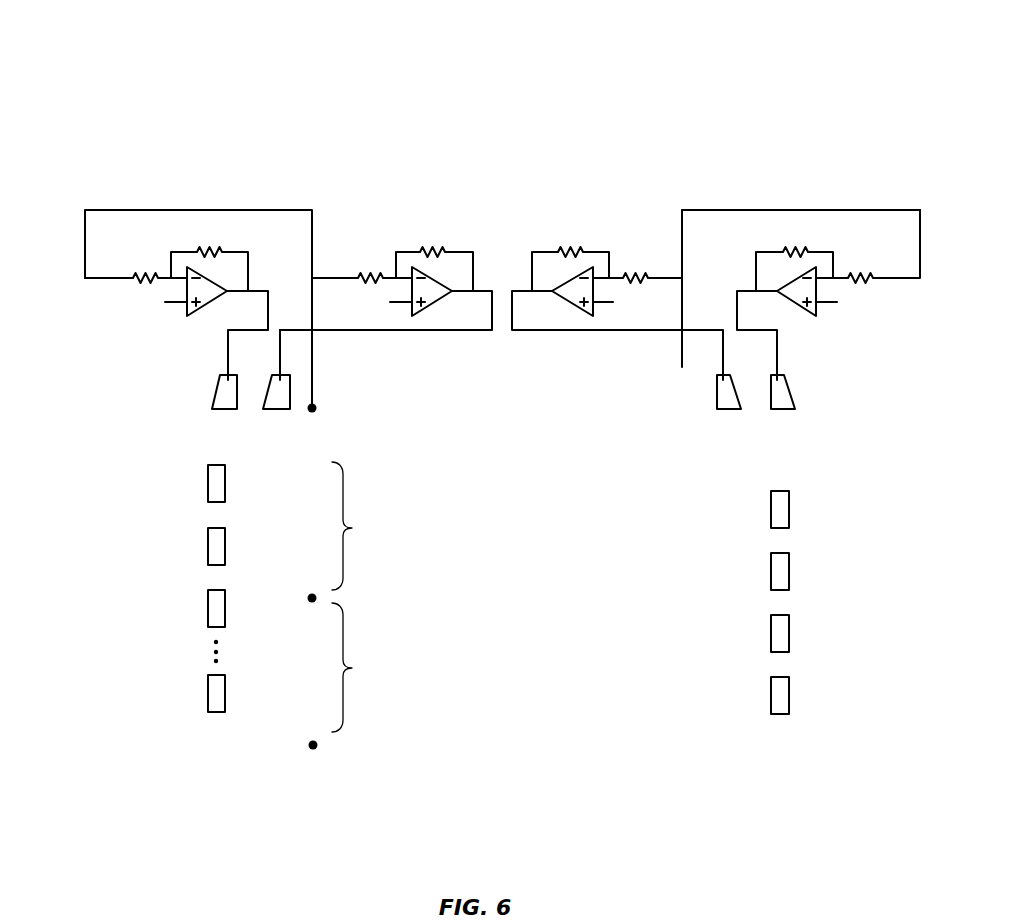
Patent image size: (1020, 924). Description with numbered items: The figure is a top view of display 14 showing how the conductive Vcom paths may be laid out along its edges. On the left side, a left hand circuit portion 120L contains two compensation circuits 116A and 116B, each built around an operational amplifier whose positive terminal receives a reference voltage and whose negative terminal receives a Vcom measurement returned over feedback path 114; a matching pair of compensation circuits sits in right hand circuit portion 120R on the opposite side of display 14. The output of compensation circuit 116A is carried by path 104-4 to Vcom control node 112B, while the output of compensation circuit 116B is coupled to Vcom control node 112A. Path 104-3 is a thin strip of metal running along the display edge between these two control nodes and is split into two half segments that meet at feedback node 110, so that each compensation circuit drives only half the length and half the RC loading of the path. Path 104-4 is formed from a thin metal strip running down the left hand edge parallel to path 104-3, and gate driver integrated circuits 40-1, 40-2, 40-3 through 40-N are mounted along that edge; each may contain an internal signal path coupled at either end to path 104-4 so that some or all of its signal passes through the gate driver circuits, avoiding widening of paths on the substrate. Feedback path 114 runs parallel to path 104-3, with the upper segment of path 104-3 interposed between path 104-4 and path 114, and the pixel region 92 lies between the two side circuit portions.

The display 14 is at (516, 95).
The left hand circuit portion 120L is at (495, 130).
The right hand circuit portion 120R is at (918, 130).
The compensation circuit 116A is at (290, 190).
The compensation circuit 116B is at (480, 190).
The Vcom control node 112A is at (315, 405).
The Vcom control node 112B is at (310, 745).
The feedback path 114 is at (358, 491).
The feedback node 110 is at (316, 597).
The path 104-3 is at (295, 699).
The path 104-4 is at (216, 578).
The gate driver integrated circuit 40-1 is at (205, 481).
The gate driver integrated circuit 40-2 is at (205, 544).
The gate driver integrated circuit 40-3 is at (205, 605).
The gate driver integrated circuit 40-N is at (205, 690).
The pixel array 92 is at (440, 752).